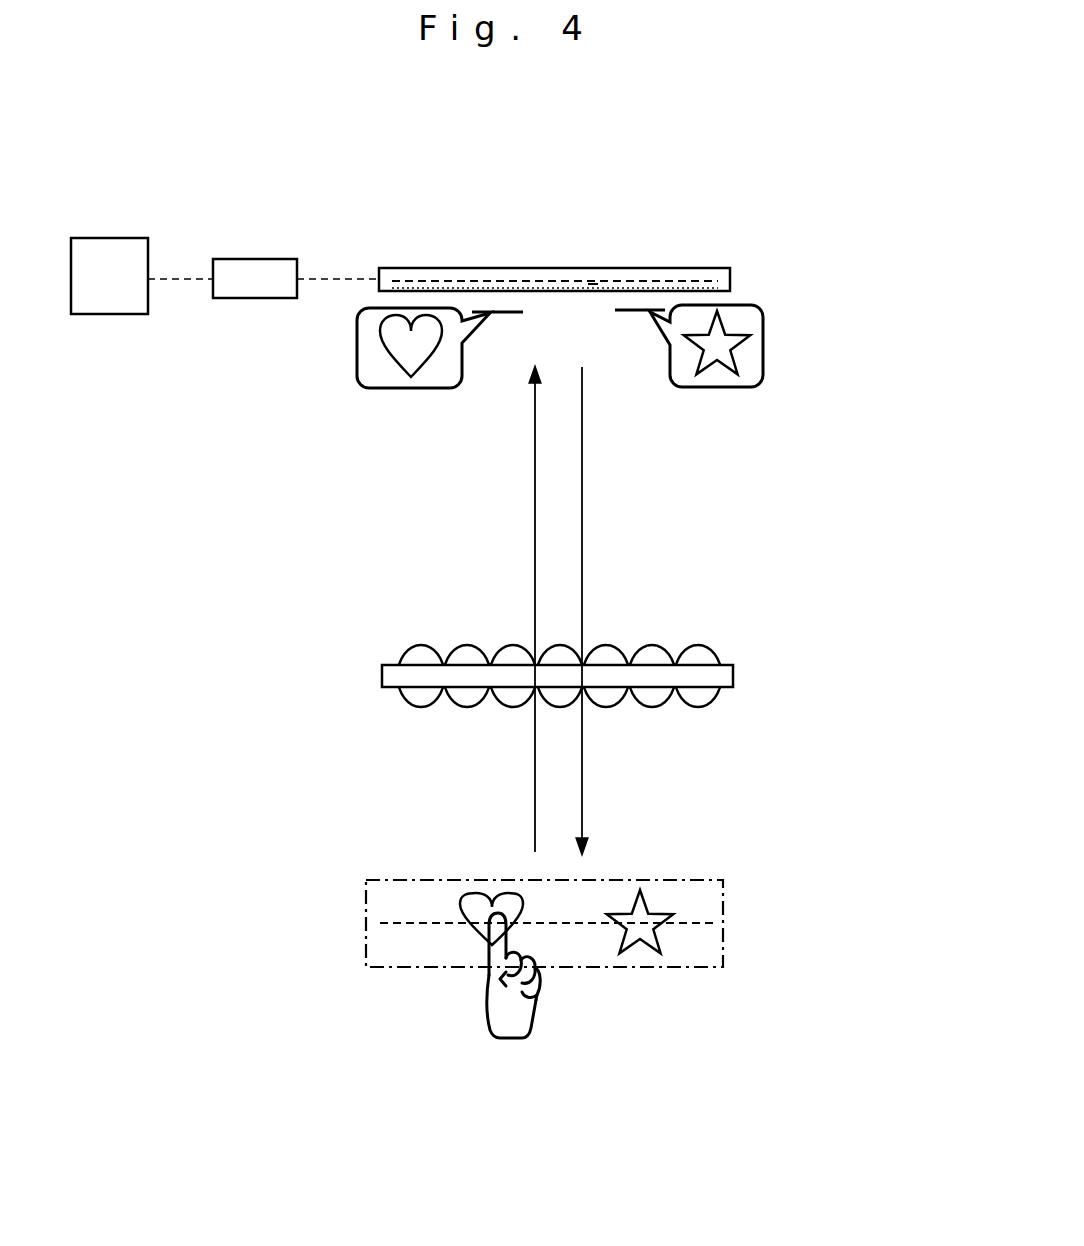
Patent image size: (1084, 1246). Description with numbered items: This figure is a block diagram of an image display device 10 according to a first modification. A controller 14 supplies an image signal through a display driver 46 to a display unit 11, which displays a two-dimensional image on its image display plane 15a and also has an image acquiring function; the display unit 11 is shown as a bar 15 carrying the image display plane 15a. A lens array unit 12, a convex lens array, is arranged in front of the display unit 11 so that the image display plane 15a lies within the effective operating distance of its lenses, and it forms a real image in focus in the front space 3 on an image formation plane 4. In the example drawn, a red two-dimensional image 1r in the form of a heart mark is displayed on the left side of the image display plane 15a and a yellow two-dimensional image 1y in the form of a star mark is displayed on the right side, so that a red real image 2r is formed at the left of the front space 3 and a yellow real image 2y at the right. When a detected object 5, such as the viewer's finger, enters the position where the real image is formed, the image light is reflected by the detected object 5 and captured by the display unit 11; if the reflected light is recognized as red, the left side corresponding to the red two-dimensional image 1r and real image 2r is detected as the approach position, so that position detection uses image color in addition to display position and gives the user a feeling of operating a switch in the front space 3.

The controller 14 is at (100, 316).
The display driver 46 is at (256, 258).
The display unit 11 is at (748, 283).
The light emitting element array 15 is at (533, 278).
The image display plane 15a is at (597, 291).
The red two-dimensional image 1r is at (513, 316).
The yellow two-dimensional image 1y is at (647, 315).
The image display device 10 is at (825, 472).
The lens array unit 12 is at (750, 676).
The front space 3 is at (728, 912).
The image formation plane 4 is at (422, 920).
The red real image 2r is at (473, 920).
The yellow real image 2y is at (643, 935).
The detected object 5 is at (510, 1018).